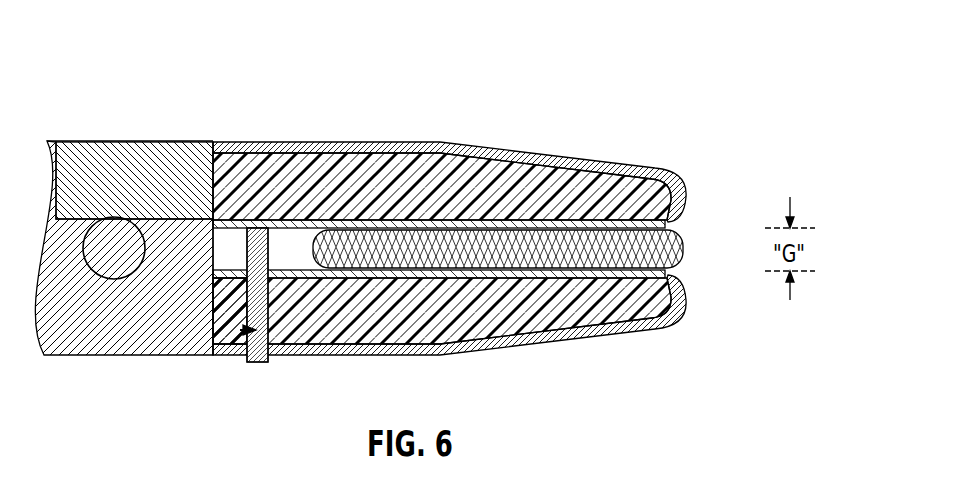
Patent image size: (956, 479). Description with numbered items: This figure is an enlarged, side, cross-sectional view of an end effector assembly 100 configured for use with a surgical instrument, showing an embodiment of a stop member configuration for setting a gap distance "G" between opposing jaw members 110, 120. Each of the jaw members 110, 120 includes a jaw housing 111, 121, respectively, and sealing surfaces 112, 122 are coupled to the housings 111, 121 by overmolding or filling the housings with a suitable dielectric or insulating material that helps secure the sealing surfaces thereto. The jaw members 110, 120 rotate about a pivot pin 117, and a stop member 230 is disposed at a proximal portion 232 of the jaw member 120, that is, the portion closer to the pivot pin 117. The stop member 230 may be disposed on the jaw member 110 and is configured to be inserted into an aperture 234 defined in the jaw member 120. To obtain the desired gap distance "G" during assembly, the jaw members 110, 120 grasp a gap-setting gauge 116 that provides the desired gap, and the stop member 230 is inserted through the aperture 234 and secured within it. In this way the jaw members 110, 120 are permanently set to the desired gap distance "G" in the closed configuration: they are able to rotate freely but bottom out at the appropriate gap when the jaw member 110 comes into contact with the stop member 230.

The end effector assembly 100 is at (608, 34).
The jaw member 110 is at (687, 194).
The jaw housing 111 is at (595, 162).
The sealing surface 112 is at (530, 222).
The gap-setting gauge 116 is at (684, 247).
The pivot pin 117 is at (112, 244).
The jaw member 120 is at (687, 303).
The jaw housing 121 is at (577, 347).
The sealing surface 122 is at (478, 273).
The stop member 230 is at (265, 320).
The proximal portion 232 is at (222, 322).
The aperture 234 is at (240, 332).